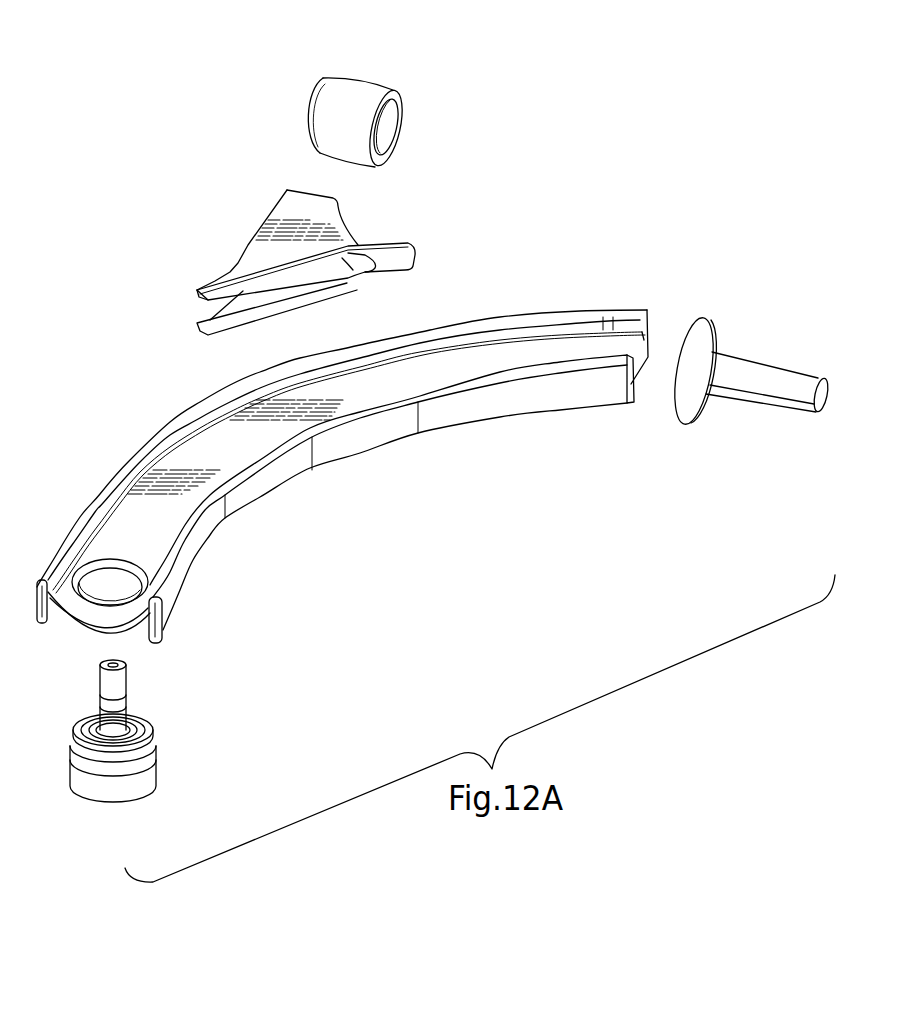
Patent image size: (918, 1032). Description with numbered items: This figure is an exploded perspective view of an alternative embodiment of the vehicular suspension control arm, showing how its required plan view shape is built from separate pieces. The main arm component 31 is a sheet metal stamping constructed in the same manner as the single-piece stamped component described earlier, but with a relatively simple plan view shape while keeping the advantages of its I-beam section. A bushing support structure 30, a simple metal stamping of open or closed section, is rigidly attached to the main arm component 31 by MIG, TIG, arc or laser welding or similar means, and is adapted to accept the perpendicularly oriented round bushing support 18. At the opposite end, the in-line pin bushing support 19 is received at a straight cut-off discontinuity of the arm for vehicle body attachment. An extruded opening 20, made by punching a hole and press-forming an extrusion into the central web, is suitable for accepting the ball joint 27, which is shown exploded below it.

The round bushing support 18 is at (375, 92).
The bushing support structure 30 is at (277, 250).
The in-line pin bushing support 19 is at (760, 372).
The main arm component 31 is at (357, 438).
The extruded opening 20 is at (113, 596).
The ball joint 27 is at (124, 684).